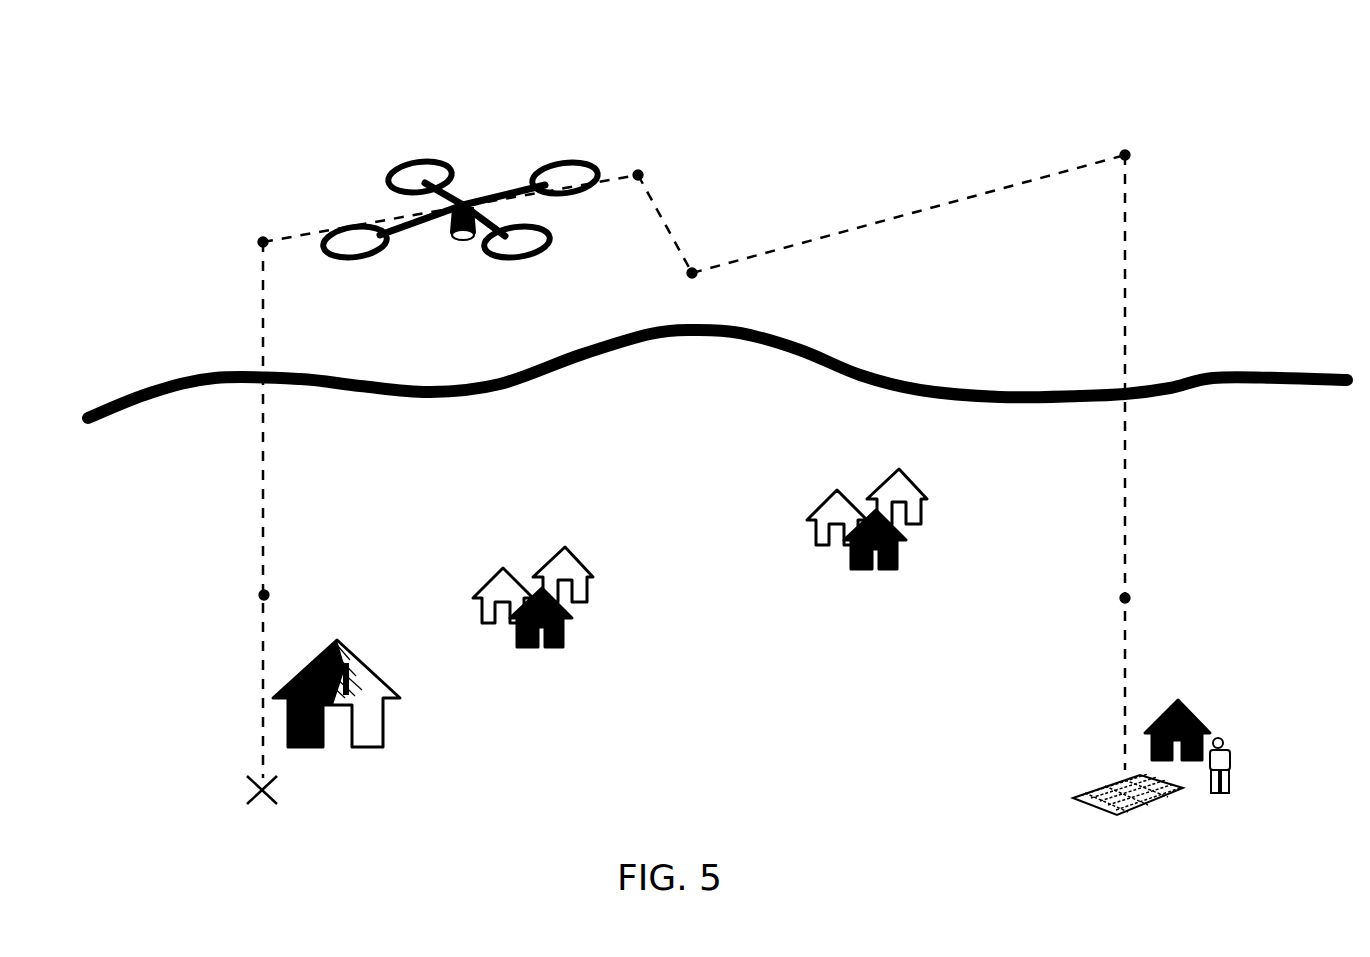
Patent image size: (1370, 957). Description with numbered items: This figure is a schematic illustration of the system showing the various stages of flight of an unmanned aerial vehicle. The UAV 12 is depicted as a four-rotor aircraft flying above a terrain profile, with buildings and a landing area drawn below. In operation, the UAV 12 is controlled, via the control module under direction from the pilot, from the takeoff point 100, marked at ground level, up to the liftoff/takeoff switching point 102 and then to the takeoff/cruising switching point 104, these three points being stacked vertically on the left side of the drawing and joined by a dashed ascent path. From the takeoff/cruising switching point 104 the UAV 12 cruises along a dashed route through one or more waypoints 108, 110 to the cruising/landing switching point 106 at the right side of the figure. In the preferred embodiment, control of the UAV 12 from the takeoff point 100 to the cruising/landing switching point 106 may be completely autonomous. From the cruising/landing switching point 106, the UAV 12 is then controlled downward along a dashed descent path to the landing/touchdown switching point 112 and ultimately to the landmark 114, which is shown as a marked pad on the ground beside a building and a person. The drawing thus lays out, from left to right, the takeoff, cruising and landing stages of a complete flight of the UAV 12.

The UAV 12 is at (473, 127).
The takeoff point 100 is at (237, 790).
The liftoff/takeoff switching point 102 is at (234, 597).
The takeoff/cruising switching point 104 is at (236, 243).
The cruising/landing switching point 106 is at (1155, 155).
The waypoint 108 is at (654, 156).
The waypoint 110 is at (676, 289).
The landing/touchdown switching point 112 is at (1154, 599).
The landmark 114 is at (1122, 807).